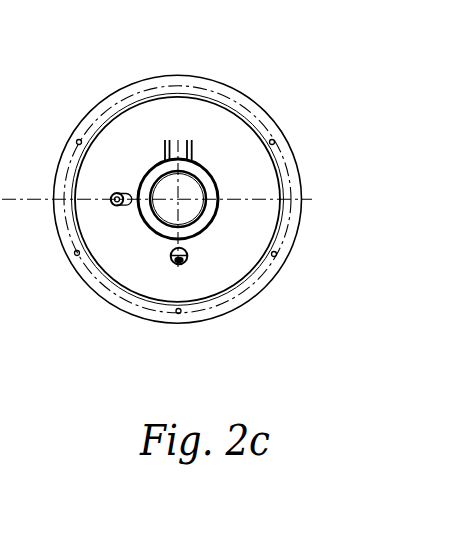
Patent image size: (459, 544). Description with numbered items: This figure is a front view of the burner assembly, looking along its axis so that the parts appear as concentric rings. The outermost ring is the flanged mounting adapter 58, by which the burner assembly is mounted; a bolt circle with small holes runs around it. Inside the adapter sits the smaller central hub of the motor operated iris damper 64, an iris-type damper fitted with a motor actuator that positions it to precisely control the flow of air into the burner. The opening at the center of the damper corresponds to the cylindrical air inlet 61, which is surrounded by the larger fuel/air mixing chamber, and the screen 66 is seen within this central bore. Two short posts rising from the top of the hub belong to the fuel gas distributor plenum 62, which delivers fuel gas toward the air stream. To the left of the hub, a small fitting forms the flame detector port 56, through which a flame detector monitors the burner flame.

The flame detector port 56 is at (122, 208).
The flanged mounting adapter 58 is at (300, 187).
The cylindrical air inlet 61 is at (188, 257).
The fuel gas distributor plenum 62 is at (165, 151).
The motor operated iris damper 64 is at (210, 225).
The screen 66 is at (172, 232).